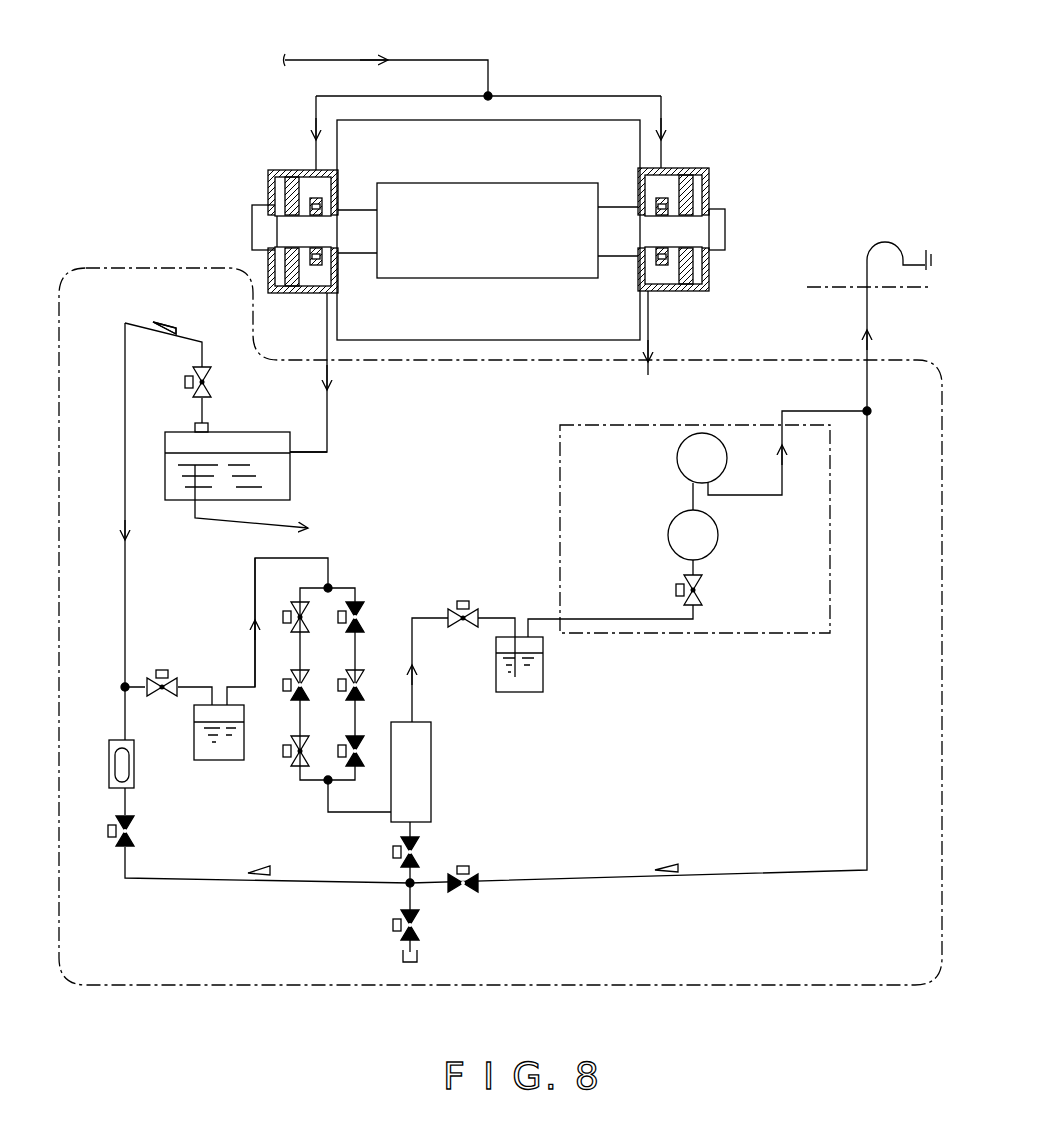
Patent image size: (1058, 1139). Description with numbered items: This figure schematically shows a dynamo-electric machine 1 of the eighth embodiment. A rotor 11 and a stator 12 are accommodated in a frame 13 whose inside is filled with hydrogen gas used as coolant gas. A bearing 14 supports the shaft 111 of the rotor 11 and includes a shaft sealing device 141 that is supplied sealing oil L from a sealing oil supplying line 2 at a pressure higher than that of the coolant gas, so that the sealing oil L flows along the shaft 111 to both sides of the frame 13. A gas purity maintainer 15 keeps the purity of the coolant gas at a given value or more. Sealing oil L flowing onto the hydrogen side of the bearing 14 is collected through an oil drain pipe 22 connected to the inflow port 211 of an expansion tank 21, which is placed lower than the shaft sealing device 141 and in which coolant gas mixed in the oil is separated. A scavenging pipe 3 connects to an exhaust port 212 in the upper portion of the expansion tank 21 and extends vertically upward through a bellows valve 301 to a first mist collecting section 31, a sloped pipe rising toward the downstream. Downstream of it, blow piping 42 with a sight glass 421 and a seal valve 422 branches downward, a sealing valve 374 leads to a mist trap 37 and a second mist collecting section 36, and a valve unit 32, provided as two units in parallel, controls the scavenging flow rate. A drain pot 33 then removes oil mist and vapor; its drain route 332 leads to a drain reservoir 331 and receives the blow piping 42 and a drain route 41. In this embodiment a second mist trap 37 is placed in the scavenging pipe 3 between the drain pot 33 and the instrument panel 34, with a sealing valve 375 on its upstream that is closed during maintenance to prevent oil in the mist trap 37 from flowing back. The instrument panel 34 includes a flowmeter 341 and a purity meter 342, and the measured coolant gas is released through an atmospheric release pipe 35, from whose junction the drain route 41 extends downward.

The dynamo-electric machine 1 is at (692, 60).
The sealing oil supplying line 2 is at (466, 60).
The scavenging pipe 3 is at (206, 342).
The rotor 11 is at (528, 188).
The stator 12 is at (572, 120).
The frame 13 is at (540, 340).
The bearing 14 is at (292, 170).
The shaft sealing device 141 is at (328, 195).
The shaft 111 is at (252, 230).
The gas purity maintainer 15 is at (718, 356).
The expansion tank 21 is at (292, 482).
The inflow port 211 is at (304, 440).
The exhaust port 212 is at (212, 420).
The oil drain pipe 22 is at (327, 410).
The first mist collecting section 31 is at (180, 332).
The bellows valve 301 is at (186, 384).
The valve unit 32 is at (372, 628).
The drain pot 33 is at (431, 776).
The drain reservoir 331 is at (418, 958).
The drain route 332 is at (412, 826).
The instrument panel 34 is at (748, 636).
The flowmeter 341 is at (718, 548).
The purity meter 342 is at (676, 460).
The atmospheric release pipe 35 is at (890, 230).
The second mist collecting section 36 is at (254, 598).
The mist trap 37 is at (228, 766).
The sealing valve 374 is at (164, 675).
The sealing valve 375 is at (464, 607).
The drain route 41 is at (868, 776).
The blow piping 42 is at (124, 722).
The sight glass 421 is at (136, 777).
The seal valve 422 is at (130, 838).
The sealing oil L is at (176, 503).